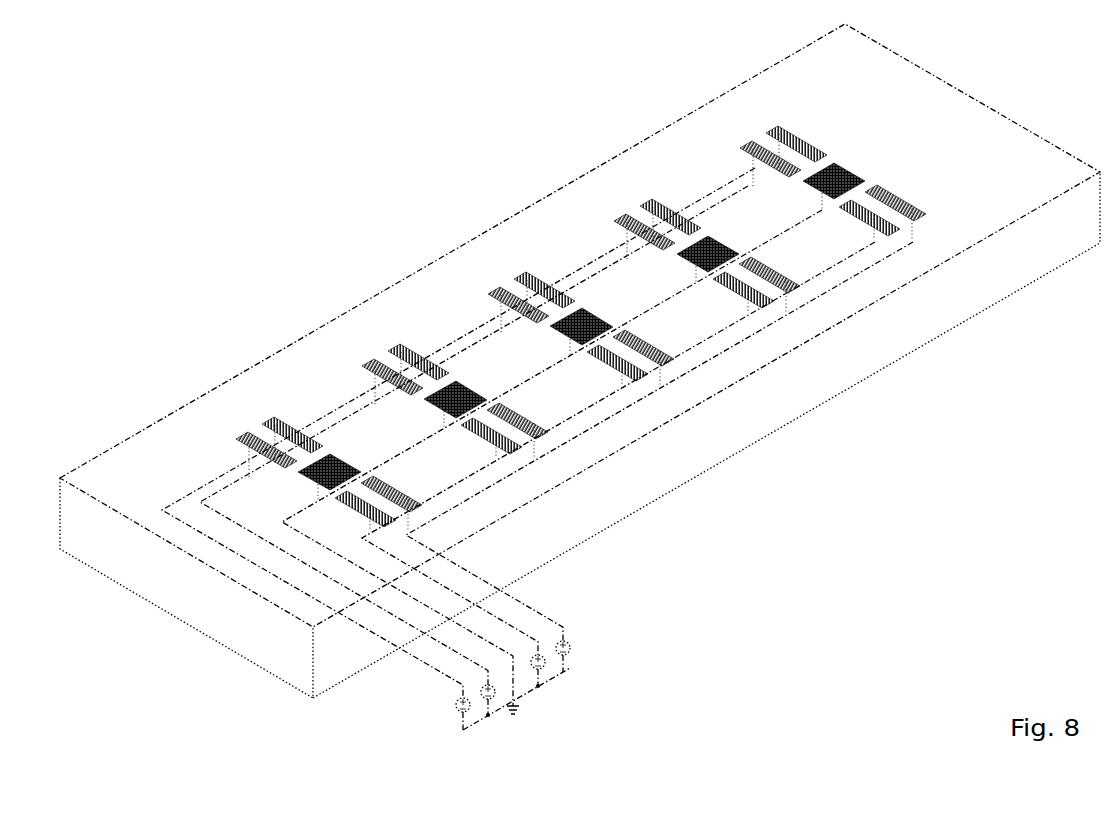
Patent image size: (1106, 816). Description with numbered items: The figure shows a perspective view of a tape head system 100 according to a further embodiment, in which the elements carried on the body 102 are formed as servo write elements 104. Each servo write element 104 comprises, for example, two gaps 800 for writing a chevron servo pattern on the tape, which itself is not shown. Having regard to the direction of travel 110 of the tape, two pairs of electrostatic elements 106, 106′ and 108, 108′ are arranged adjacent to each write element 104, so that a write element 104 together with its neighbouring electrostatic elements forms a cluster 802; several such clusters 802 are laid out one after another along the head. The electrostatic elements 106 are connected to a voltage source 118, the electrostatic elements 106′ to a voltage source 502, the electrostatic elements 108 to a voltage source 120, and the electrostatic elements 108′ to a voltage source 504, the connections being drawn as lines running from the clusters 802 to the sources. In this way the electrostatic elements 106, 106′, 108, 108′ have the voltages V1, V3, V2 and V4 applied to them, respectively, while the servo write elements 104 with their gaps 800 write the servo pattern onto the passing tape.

The tape head system 100 is at (296, 115).
The substrate 102 is at (927, 318).
The servo write element 104 is at (330, 458).
The electrostatic element 106 is at (245, 446).
The electrostatic element 106′ is at (283, 425).
The electrostatic element 108 is at (373, 515).
The electrostatic element 108′ is at (405, 493).
The direction of travel 110 is at (400, 114).
The voltage source 118 is at (453, 711).
The voltage source 120 is at (547, 667).
The voltage source 502 is at (496, 700).
The voltage source 504 is at (573, 645).
The gap 800 is at (350, 465).
The cluster 802 is at (462, 238).